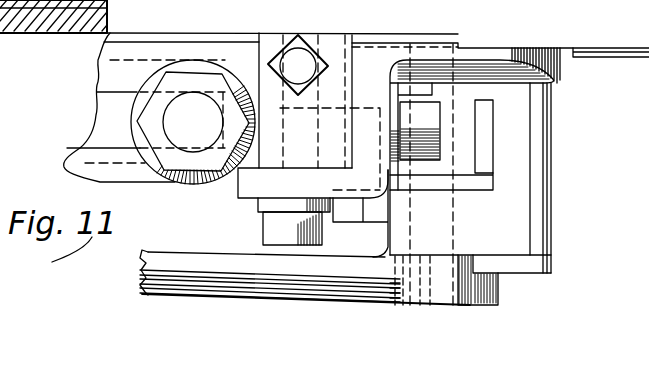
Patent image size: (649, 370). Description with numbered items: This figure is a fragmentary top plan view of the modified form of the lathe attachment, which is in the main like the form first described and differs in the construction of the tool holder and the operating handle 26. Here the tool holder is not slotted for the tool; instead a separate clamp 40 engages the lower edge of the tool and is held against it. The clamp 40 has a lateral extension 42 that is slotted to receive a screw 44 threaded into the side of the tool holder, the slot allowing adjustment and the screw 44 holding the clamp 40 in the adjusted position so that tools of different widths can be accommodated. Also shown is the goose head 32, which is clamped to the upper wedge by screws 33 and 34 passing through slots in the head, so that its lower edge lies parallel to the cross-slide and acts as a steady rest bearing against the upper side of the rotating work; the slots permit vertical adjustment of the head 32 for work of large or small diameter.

The operating handle 26 is at (182, 260).
The goose head 32 is at (607, 79).
The screw 33 is at (318, 236).
The screw 34 is at (438, 146).
The clamp 40 is at (537, 267).
The lateral extension 42 is at (483, 265).
The screw 44 is at (498, 295).